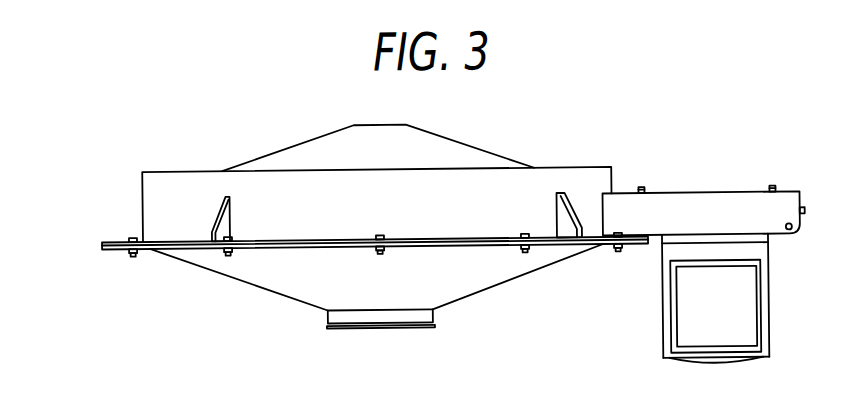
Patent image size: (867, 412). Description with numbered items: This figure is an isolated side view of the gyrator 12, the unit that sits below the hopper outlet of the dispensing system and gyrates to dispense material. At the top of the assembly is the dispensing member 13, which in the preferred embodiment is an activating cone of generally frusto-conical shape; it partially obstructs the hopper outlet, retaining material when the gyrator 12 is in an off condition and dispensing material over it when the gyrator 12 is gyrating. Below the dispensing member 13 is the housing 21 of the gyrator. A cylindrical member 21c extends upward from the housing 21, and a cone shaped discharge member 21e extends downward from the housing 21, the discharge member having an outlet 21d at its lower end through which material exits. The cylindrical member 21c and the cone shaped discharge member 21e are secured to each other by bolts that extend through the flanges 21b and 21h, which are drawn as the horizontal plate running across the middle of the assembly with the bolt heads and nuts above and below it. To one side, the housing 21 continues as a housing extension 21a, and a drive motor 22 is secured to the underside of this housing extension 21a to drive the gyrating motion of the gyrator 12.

The gyrator 12 is at (558, 122).
The dispensing member 13 is at (445, 154).
The housing 21 is at (142, 197).
The housing extension 21a is at (690, 196).
The flange 21b is at (113, 239).
The cylindrical member 21c is at (192, 186).
The outlet 21d is at (433, 325).
The cone shaped discharge member 21e is at (237, 277).
The flange 21h is at (110, 250).
The drive motor 22 is at (757, 289).